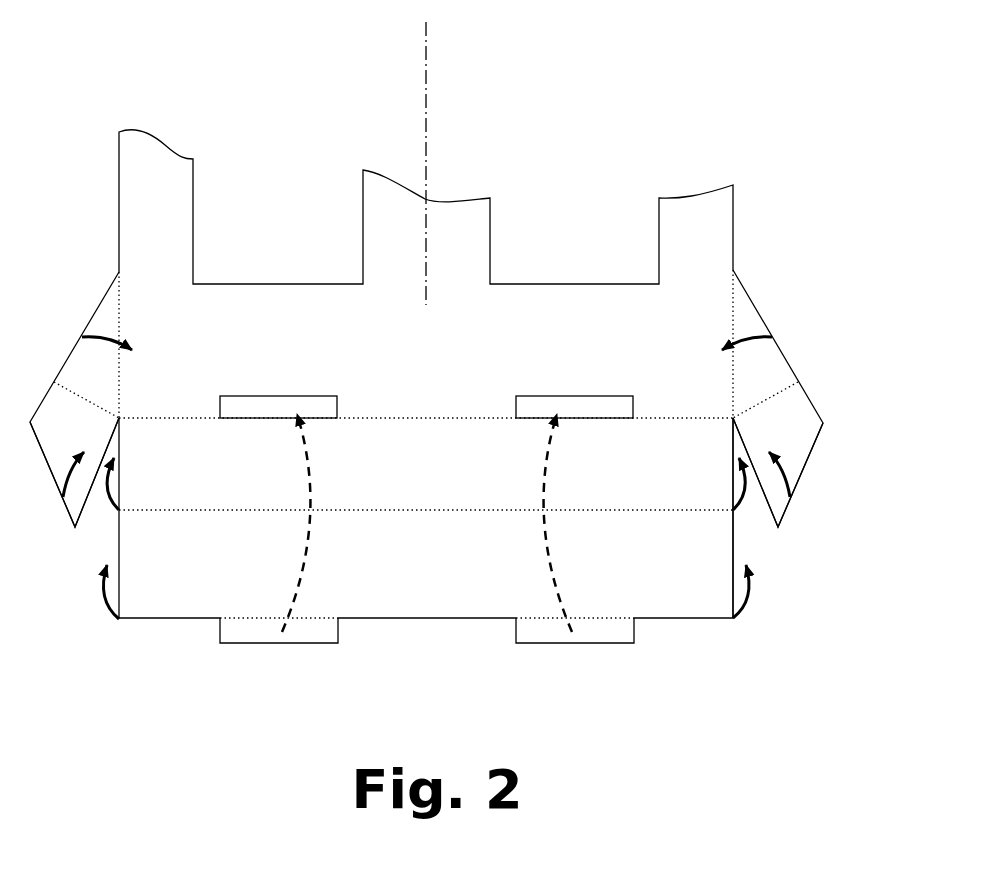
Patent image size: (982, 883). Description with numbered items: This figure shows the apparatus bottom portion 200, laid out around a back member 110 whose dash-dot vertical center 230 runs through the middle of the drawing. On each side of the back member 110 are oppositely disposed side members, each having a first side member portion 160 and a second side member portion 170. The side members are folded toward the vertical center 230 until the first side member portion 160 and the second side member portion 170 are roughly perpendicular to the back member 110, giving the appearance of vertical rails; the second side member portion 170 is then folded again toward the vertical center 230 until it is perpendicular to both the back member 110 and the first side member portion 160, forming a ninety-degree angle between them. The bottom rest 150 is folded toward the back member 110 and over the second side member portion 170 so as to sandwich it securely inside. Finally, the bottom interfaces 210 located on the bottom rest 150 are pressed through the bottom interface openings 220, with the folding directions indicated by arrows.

The apparatus bottom portion 200 is at (634, 88).
The back member 110 is at (411, 362).
The vertical center 230 is at (427, 108).
The first side member portion 160 is at (102, 322).
The second side member portion 170 is at (45, 440).
The bottom rest 150 is at (752, 417).
The bottom interface 210 is at (320, 632).
The bottom interface opening 220 is at (300, 393).